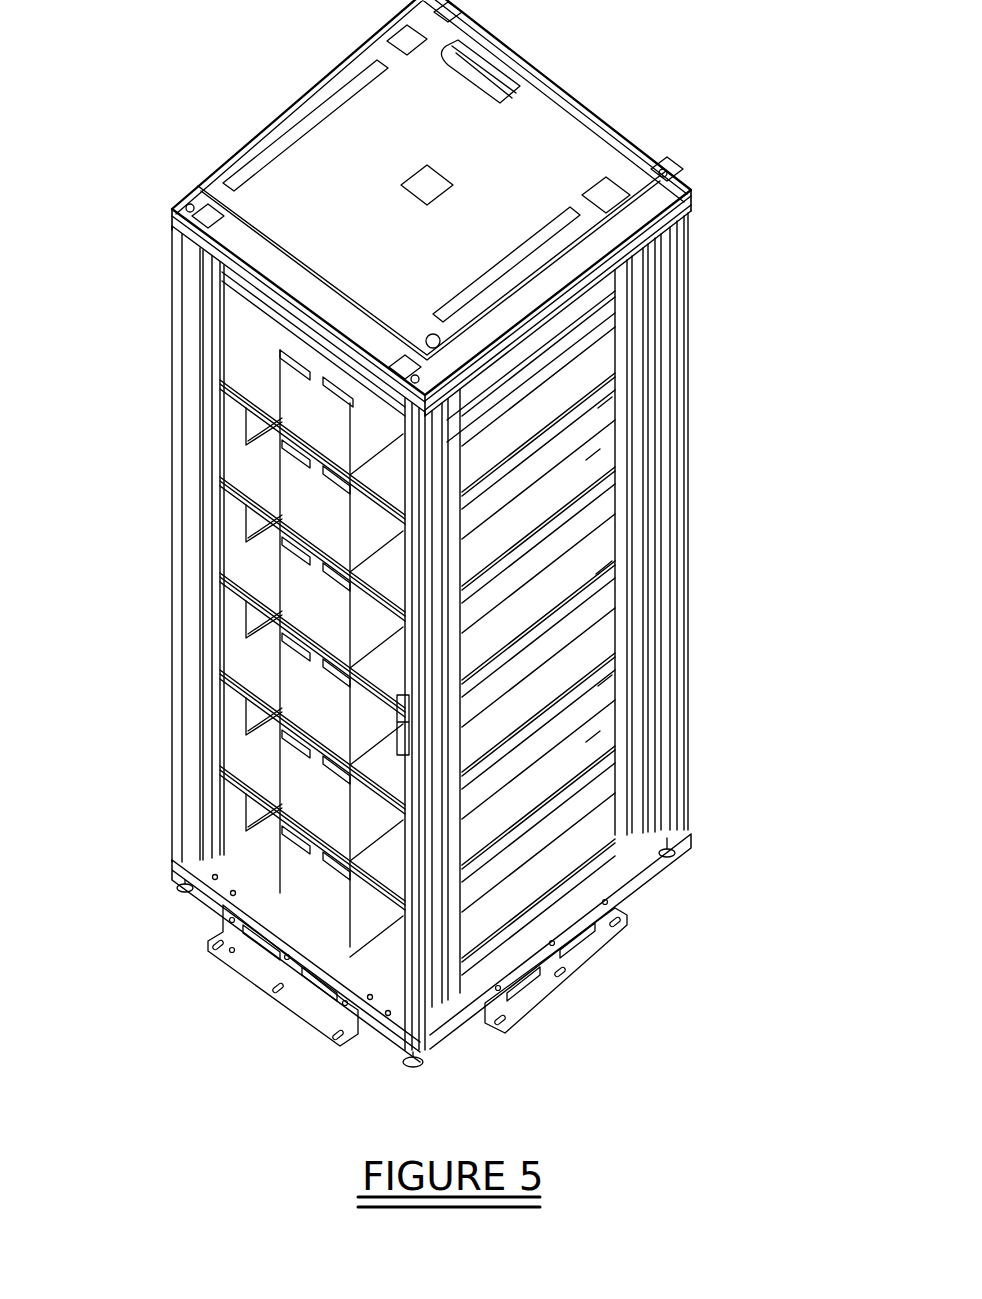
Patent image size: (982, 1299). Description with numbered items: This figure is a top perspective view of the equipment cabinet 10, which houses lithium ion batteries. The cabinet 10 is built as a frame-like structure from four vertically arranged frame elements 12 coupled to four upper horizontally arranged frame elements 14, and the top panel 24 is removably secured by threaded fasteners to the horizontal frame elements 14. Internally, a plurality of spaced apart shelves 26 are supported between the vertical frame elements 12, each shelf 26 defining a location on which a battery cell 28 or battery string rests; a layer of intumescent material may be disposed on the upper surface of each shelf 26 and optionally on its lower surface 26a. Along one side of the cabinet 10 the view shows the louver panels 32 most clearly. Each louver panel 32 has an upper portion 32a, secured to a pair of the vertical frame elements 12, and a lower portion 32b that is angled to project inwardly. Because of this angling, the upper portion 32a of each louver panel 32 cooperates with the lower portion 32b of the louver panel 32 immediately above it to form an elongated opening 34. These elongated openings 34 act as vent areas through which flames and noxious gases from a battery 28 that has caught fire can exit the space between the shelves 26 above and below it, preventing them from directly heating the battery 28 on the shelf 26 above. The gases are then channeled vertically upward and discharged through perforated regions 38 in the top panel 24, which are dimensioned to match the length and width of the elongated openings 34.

The equipment cabinet 10 is at (283, 70).
The vertically arranged frame element 12 is at (683, 290).
The upper horizontally arranged frame element 14 is at (197, 234).
The top panel 24 is at (552, 162).
The shelf 26 is at (222, 473).
The lower surface of shelf 26a is at (263, 683).
The battery cell 28 is at (303, 493).
The louver panel 32 is at (608, 336).
The upper portion of louver panel 32a is at (600, 412).
The lower portion of louver panel 32b is at (590, 455).
The elongated opening 34 is at (600, 570).
The perforated region 38 is at (330, 105).